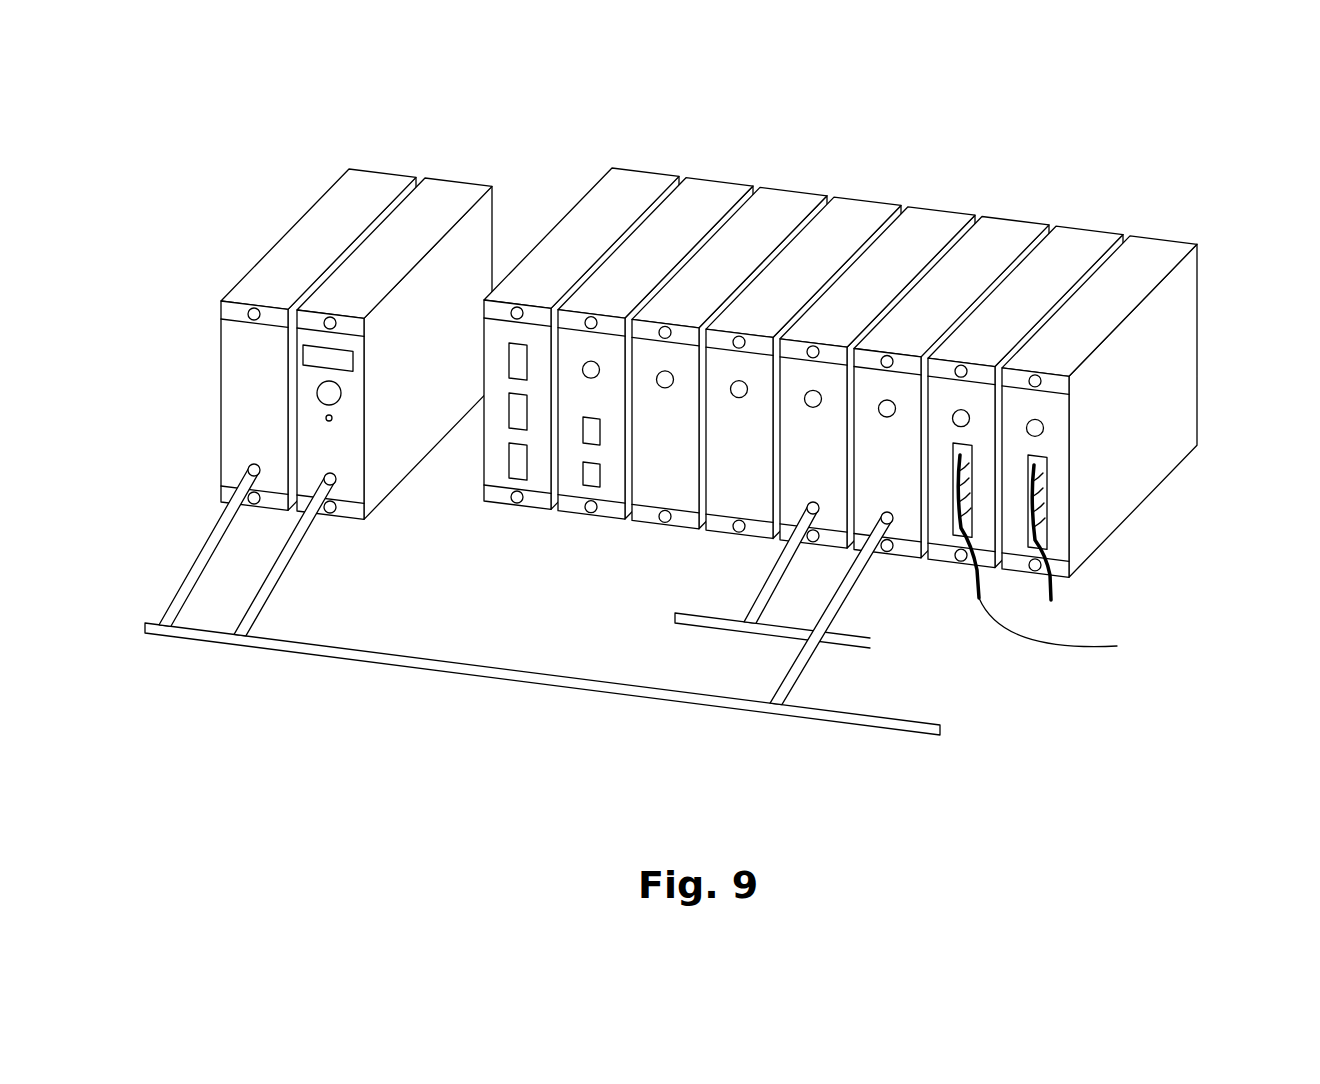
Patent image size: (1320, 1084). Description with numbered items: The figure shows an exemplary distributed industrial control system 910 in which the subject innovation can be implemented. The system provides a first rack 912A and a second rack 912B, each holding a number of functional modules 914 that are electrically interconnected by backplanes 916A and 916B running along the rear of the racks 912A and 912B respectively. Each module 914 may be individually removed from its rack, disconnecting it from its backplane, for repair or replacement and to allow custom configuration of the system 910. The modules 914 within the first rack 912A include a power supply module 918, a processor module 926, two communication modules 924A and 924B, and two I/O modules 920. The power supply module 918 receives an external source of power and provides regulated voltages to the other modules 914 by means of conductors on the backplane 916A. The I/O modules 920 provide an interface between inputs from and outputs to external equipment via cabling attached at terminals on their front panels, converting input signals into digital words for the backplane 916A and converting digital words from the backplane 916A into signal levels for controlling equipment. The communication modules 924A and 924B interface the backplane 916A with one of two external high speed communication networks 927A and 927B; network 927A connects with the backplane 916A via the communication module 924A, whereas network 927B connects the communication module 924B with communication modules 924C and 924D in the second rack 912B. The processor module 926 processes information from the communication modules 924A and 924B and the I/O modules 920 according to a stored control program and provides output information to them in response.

The distributed industrial control system 910 is at (1072, 790).
The first rack 912A is at (821, 373).
The second rack 912B is at (321, 356).
The functional modules 914 is at (798, 377).
The backplane 916A is at (1187, 178).
The backplane 916B is at (509, 130).
The power supply module 918 is at (500, 477).
The I/O modules 920 is at (1050, 464).
The communication module 924A is at (825, 383).
The communication module 924B is at (907, 393).
The communication module 924C is at (242, 437).
The communication module 924D is at (343, 483).
The processor module 926 is at (577, 483).
The high speed communication network 927A is at (683, 612).
The high speed communication network 927B is at (377, 652).